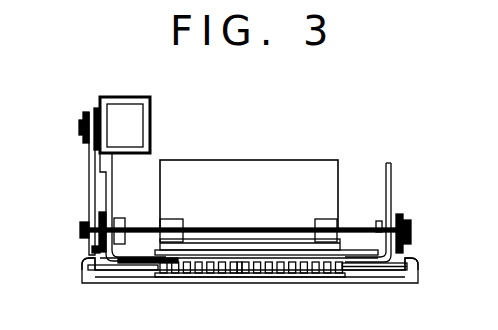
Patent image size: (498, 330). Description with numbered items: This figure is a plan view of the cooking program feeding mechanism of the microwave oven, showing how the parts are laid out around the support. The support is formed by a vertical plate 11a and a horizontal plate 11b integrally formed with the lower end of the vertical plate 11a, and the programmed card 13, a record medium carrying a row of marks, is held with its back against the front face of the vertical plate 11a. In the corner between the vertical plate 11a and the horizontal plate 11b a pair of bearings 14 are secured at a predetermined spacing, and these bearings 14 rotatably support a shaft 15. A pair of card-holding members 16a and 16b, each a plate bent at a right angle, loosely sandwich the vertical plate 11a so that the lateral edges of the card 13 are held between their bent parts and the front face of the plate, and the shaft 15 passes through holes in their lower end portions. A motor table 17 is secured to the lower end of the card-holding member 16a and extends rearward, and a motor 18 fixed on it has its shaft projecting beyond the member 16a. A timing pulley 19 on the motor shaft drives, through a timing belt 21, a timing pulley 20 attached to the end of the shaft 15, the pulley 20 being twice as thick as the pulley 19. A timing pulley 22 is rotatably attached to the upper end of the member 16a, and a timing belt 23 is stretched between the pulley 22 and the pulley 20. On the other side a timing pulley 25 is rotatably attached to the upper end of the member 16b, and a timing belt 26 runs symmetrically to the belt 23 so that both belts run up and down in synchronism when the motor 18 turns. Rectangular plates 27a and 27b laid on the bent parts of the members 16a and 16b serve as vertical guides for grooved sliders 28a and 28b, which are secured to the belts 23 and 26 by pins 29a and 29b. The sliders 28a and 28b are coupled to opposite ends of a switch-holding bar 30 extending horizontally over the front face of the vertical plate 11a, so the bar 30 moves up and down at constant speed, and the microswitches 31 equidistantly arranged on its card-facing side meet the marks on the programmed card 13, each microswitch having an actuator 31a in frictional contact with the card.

The vertical plate 11a is at (248, 247).
The horizontal plate 11b is at (290, 165).
The programmed card 13 is at (363, 238).
The bearings 14 is at (172, 220).
The shaft 15 is at (140, 224).
The card-holding member 16a is at (114, 205).
The card-holding member 16b is at (388, 164).
The motor table 17 is at (150, 104).
The motor 18 is at (135, 130).
The timing pulley 19 is at (82, 115).
The timing pulley 20 is at (80, 232).
The timing belt 21 is at (88, 178).
The timing pulley 22 is at (103, 212).
The timing belt 23 is at (92, 250).
The timing pulley 25 is at (406, 218).
The timing belt 26 is at (408, 244).
The rectangular plate 27a is at (130, 268).
The rectangular plate 27b is at (355, 270).
The slider 28a is at (92, 283).
The slider 28b is at (408, 280).
The pin 29a is at (80, 263).
The pin 29b is at (413, 262).
The switch-holding bar 30 is at (296, 258).
The microswitches 31 is at (220, 274).
The tooth gap 31a is at (257, 264).